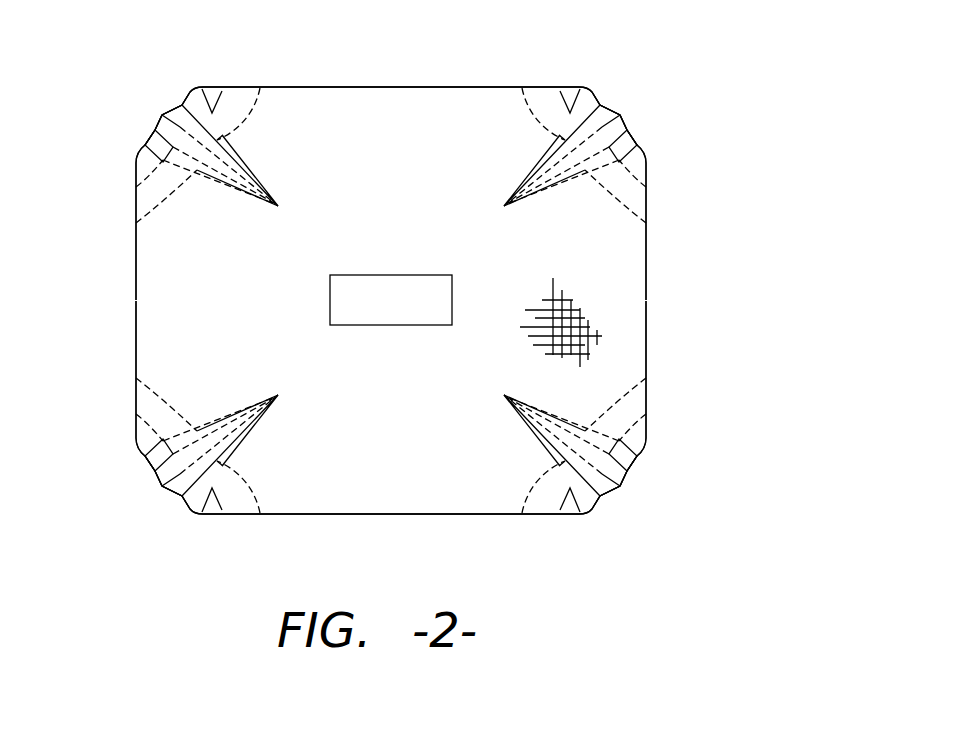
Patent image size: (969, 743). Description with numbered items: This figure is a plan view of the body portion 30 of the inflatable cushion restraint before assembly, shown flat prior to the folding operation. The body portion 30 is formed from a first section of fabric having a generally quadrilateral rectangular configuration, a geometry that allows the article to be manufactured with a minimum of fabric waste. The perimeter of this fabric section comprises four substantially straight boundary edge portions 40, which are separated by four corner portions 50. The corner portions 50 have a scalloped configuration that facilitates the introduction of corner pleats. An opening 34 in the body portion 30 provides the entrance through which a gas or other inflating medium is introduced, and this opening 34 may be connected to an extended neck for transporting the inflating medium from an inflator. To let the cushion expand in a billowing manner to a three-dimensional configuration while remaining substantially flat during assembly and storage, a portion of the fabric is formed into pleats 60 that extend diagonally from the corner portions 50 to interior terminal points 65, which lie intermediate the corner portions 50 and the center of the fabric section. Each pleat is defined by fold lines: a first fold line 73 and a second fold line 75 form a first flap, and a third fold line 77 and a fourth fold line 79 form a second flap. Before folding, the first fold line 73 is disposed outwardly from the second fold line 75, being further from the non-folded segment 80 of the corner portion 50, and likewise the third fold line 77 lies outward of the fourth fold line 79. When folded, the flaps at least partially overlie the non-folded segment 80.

The body portion 30 is at (715, 127).
The opening 34 is at (400, 274).
The boundary edge portions 40 is at (368, 87).
The corner portions 50 is at (152, 98).
The pleats 60 is at (330, 75).
The interior terminal points 65 is at (278, 206).
The first fold line 73 is at (220, 86).
The second fold line 75 is at (261, 88).
The third fold line 77 is at (136, 223).
The fourth fold line 79 is at (136, 187).
The non-folded segment 80 is at (180, 127).